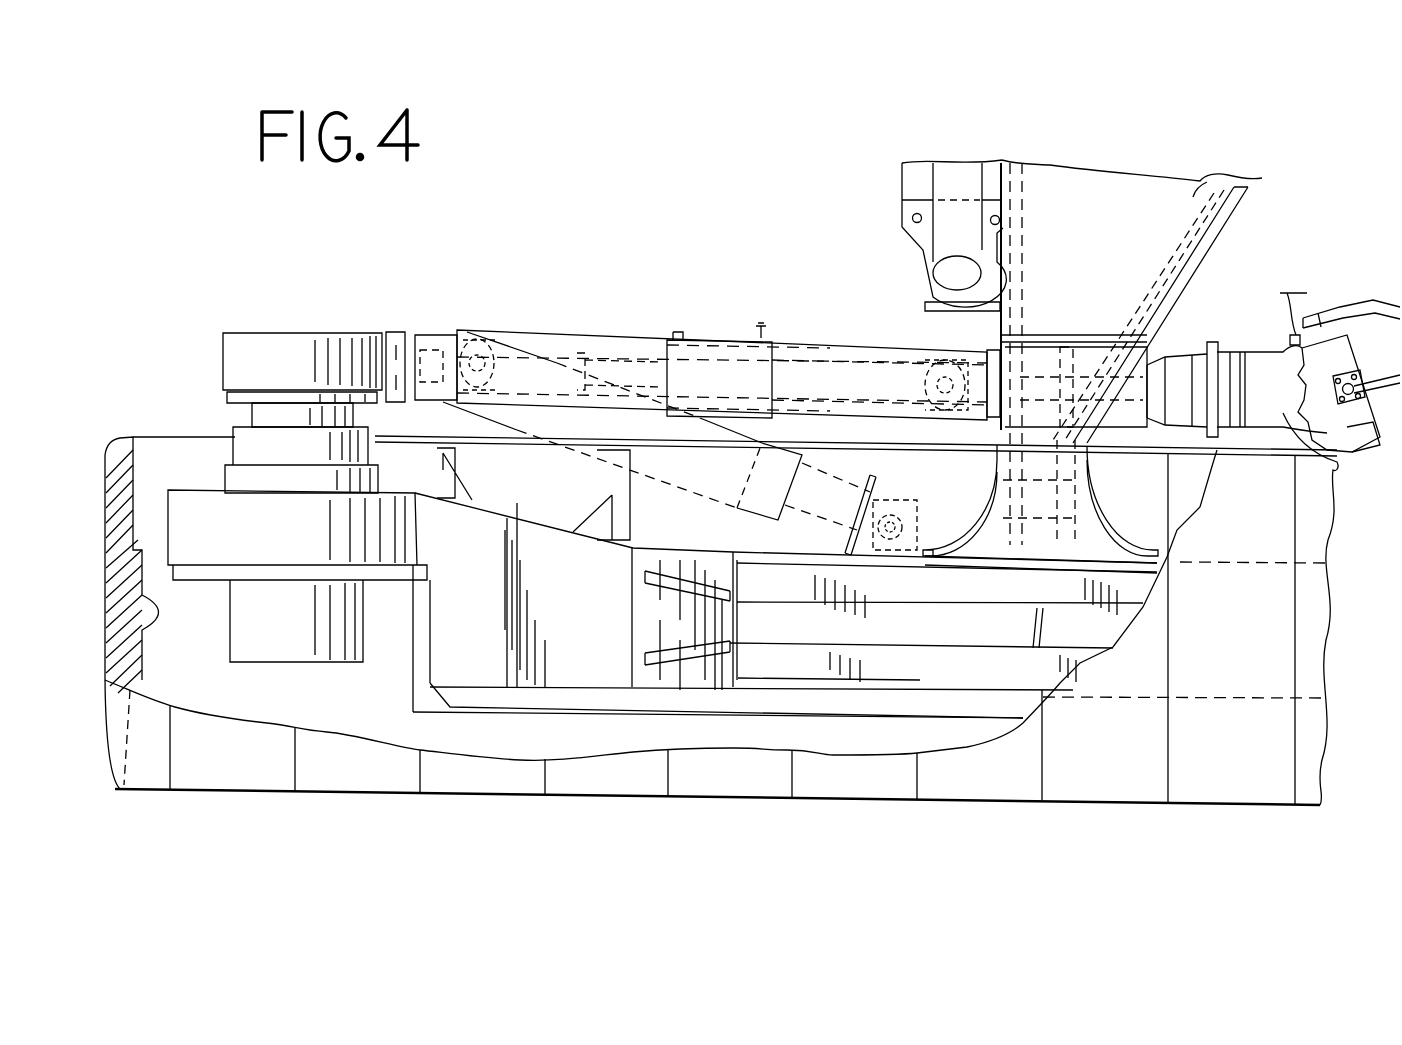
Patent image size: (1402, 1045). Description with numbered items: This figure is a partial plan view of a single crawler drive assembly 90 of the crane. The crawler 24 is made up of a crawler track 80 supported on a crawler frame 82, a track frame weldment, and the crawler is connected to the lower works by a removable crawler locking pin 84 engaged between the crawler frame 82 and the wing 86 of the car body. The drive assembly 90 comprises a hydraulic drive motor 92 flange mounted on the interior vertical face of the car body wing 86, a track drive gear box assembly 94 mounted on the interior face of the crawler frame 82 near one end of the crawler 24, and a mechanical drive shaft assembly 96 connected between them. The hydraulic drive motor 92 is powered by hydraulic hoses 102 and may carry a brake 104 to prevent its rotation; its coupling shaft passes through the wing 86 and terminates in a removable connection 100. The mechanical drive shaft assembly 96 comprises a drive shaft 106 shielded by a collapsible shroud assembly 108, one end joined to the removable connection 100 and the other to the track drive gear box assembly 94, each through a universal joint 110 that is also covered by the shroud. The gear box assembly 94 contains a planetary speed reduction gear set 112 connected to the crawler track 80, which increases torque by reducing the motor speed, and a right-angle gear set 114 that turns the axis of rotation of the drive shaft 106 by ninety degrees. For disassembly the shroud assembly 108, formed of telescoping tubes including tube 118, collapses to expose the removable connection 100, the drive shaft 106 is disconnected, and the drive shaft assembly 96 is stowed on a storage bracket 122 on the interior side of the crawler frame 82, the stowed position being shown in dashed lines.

The crawler 24 is at (1213, 805).
The crawler track 80 is at (1100, 763).
The crawler frame 82 is at (893, 663).
The crawler locking pin 84 is at (1080, 497).
The wing 86 is at (1168, 301).
The crawler drive assembly 90 is at (623, 262).
The hydraulic drive motor 92 is at (1333, 470).
The track drive gear box assembly 94 is at (243, 478).
The mechanical drive shaft assembly 96 is at (706, 330).
The removable connection 100 is at (997, 367).
The hydraulic hoses 102 is at (1370, 372).
The brake 104 is at (1180, 363).
The drive shaft 106 is at (810, 357).
The collapsible shroud assembly 108 is at (593, 338).
The universal joint 110 is at (480, 352).
The speed reduction gear set 112 is at (260, 415).
The right-angle gear set 114 is at (300, 350).
The tube 118 is at (530, 332).
The storage bracket 122 is at (873, 483).